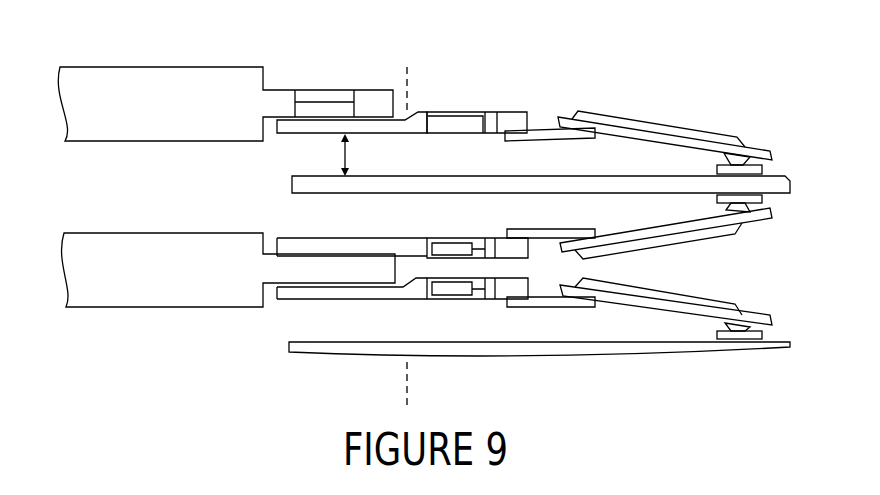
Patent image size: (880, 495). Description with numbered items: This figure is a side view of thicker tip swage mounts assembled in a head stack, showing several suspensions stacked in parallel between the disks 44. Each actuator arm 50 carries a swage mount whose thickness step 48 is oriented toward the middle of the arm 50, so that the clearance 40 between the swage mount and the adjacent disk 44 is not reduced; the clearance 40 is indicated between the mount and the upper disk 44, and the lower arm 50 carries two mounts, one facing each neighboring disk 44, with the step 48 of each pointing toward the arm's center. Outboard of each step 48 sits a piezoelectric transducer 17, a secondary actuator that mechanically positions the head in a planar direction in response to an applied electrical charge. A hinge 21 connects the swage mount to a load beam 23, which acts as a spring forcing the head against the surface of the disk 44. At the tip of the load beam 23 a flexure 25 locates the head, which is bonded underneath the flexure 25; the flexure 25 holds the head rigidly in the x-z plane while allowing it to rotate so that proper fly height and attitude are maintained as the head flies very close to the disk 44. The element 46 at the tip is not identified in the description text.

The arm 50 is at (169, 75).
The thickness step 48 is at (418, 112).
The piezoelectric transducer 17 is at (473, 128).
The hinge 21 is at (538, 133).
The load beam 23 is at (652, 137).
The flexure 25 is at (700, 150).
The slider 46 is at (748, 168).
The disk 44 is at (410, 185).
The clearance 40 is at (343, 153).